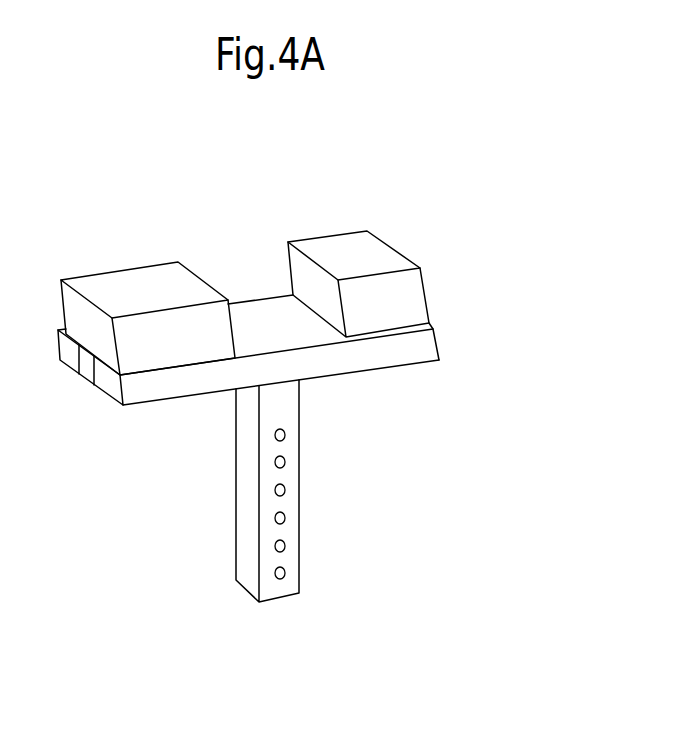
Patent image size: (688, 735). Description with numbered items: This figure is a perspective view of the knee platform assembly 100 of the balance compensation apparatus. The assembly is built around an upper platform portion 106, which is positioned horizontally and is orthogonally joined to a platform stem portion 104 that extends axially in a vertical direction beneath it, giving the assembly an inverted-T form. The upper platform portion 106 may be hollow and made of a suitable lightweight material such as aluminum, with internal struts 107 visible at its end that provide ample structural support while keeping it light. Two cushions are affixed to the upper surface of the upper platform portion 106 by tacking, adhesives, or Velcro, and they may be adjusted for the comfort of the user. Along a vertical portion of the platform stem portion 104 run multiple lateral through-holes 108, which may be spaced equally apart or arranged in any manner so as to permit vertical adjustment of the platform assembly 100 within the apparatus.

The knee platform assembly 100 is at (391, 201).
The platform stem portion 104 is at (297, 563).
The upper platform portion 106 is at (410, 357).
The internal struts 107 is at (98, 373).
The lateral through-holes 108 is at (273, 435).